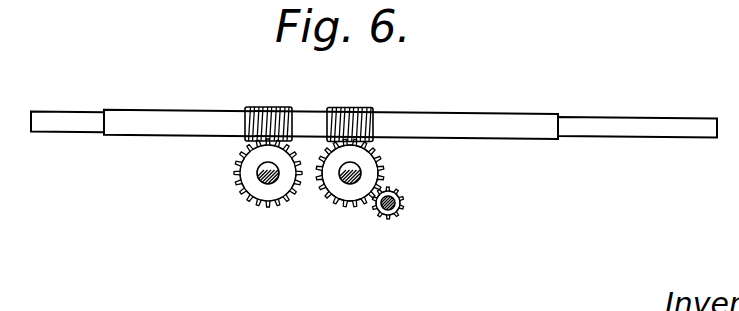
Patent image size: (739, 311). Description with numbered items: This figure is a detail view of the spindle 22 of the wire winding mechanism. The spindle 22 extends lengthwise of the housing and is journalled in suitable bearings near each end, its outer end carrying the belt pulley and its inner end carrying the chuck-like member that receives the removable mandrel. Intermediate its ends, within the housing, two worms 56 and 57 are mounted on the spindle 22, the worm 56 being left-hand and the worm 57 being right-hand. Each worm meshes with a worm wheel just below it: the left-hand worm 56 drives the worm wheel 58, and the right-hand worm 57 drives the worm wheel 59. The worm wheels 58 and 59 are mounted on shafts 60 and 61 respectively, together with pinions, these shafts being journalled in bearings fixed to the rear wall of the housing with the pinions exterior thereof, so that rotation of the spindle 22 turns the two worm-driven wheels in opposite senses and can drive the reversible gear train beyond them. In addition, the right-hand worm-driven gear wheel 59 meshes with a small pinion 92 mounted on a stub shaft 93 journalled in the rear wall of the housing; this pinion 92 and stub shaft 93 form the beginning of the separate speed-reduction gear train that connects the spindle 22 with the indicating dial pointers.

The spindle 22 is at (483, 120).
The worm 56 is at (257, 107).
The worm 57 is at (346, 107).
The worm wheel 58 is at (243, 182).
The worm wheel 59 is at (380, 165).
The shaft 60 is at (266, 178).
The shaft 61 is at (346, 182).
The small pinion 92 is at (404, 205).
The stub shaft 93 is at (394, 211).